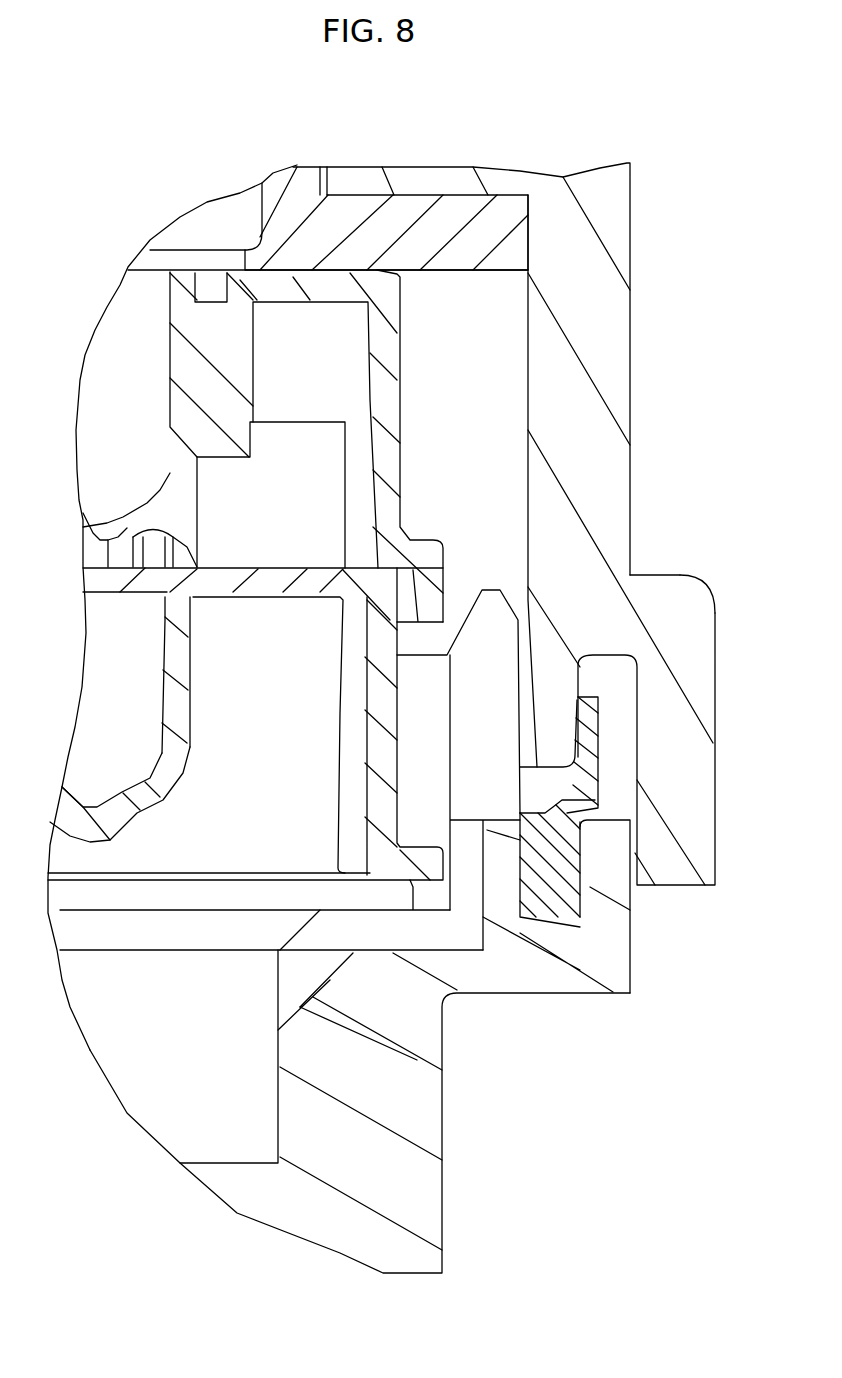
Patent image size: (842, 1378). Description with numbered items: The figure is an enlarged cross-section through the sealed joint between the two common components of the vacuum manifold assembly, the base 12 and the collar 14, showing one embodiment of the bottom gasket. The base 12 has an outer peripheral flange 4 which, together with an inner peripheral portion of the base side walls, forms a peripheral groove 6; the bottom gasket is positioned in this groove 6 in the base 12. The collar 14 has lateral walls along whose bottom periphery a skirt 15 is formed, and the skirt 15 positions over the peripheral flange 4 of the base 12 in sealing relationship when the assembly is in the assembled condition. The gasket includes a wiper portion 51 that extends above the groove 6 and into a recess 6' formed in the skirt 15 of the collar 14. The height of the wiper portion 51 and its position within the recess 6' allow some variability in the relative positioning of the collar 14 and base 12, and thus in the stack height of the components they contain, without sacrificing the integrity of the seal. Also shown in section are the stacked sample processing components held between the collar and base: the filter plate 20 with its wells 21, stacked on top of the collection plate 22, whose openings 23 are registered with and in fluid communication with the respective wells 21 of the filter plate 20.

The outer peripheral flange 4 is at (613, 947).
The peripheral groove 6 is at (557, 941).
The recess 6' is at (669, 594).
The base 12 is at (425, 1200).
The collar 14 is at (613, 187).
The skirt 15 is at (690, 757).
The filter plate 20 is at (402, 352).
The wells 21 is at (123, 413).
The collection plate 22 is at (390, 700).
The openings 23 is at (127, 760).
The wiper portion 51 is at (585, 700).